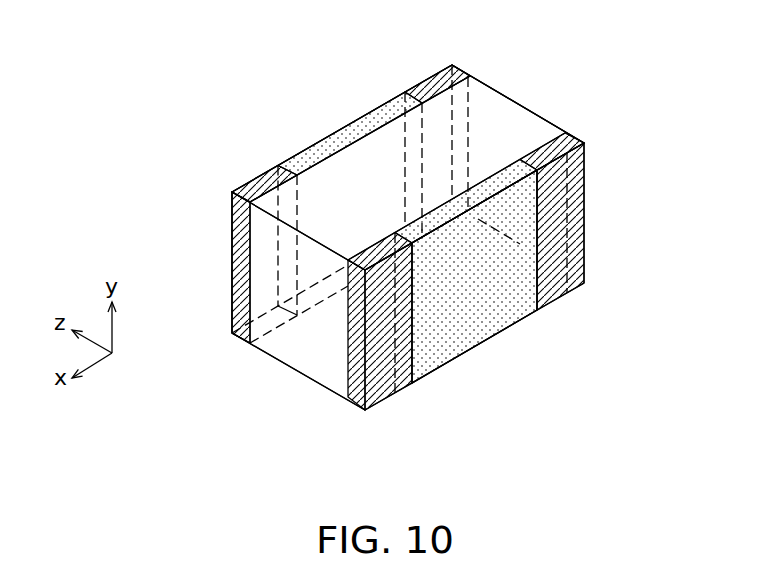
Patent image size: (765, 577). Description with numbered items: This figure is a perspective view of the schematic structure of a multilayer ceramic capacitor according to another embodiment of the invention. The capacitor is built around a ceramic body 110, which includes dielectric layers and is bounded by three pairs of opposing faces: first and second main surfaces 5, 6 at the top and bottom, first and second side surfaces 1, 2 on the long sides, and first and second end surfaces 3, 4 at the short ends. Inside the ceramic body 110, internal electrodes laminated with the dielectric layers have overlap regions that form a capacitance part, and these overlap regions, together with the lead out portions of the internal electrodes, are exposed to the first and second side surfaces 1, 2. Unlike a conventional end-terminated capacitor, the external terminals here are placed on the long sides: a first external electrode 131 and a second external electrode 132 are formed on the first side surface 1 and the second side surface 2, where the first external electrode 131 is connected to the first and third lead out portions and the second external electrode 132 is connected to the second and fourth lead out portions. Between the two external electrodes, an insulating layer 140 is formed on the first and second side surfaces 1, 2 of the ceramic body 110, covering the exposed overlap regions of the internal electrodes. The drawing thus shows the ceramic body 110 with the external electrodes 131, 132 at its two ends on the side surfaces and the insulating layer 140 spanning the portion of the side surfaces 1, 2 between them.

The ceramic body 110 is at (289, 351).
The first external electrode 131 is at (262, 174).
The second external electrode 132 is at (433, 80).
The insulating layer 140 is at (347, 133).
The first side surface 1 is at (492, 302).
The second side surface 2 is at (309, 124).
The first end surface 3 is at (236, 293).
The second end surface 4 is at (500, 108).
The first main surface 5 is at (385, 135).
The second main surface 6 is at (326, 357).